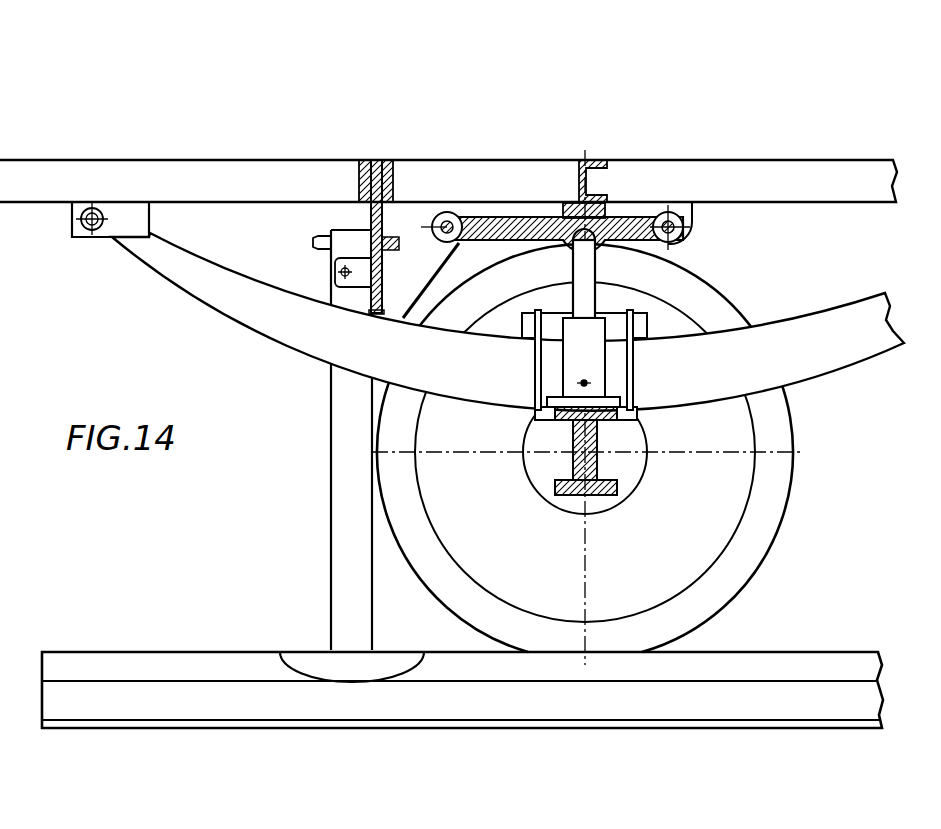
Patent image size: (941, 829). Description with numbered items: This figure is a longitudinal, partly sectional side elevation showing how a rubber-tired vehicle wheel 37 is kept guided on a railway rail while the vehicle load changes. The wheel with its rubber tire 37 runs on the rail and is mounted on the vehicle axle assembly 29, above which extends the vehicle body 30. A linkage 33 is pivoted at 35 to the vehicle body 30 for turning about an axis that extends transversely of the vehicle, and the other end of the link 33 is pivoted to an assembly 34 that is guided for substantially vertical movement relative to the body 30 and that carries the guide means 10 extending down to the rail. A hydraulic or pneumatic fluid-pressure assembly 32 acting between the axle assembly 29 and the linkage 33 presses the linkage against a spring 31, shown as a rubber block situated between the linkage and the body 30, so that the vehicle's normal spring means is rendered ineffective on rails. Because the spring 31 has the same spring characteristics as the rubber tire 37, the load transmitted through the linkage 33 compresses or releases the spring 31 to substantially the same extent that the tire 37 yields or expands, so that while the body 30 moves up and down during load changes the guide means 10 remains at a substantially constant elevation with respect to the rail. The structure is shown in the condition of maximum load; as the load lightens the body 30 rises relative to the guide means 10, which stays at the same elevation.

The guide means 10 is at (347, 548).
The vehicle axle assembly 29 is at (600, 470).
The vehicle body 30 is at (745, 165).
The spring 31 is at (607, 198).
The fluid-pressure assembly 32 is at (597, 365).
The linkage 33 is at (474, 217).
The assembly 34 is at (379, 160).
The pivot 35 is at (668, 210).
The rubber tire 37 is at (780, 512).